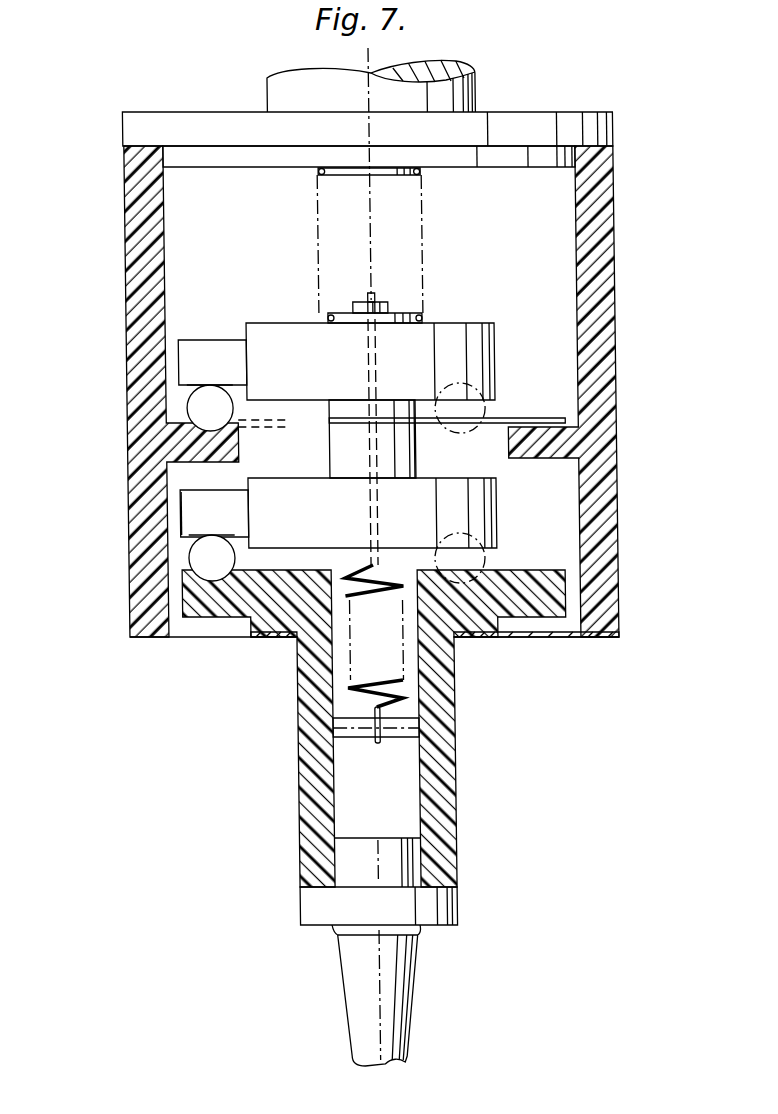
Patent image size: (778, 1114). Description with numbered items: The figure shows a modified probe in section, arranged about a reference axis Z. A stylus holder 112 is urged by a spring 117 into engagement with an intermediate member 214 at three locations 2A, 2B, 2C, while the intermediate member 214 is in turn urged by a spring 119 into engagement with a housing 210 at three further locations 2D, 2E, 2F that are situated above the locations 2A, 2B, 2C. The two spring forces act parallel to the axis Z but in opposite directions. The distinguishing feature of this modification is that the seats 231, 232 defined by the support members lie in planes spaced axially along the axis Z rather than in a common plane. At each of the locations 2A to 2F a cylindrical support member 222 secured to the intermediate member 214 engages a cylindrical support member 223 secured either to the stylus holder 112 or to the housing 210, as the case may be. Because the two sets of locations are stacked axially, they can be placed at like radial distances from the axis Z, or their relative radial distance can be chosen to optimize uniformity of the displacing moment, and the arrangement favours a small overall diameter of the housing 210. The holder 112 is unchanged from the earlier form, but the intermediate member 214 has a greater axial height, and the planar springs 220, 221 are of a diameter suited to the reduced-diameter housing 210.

The reference axis Z is at (367, 240).
The holder 112 is at (289, 765).
The spring 117 is at (336, 690).
The spring 119 is at (314, 173).
The housing 210 is at (611, 268).
The intermediate member 214 is at (490, 383).
The planar spring 220 is at (542, 417).
The planar spring 221 is at (512, 638).
The cylindrical support member 222 is at (188, 340).
The cylindrical support member 223 is at (198, 408).
The seat 231 is at (188, 397).
The seat 232 is at (182, 505).
The location 2A is at (203, 535).
The location 2B is at (500, 551).
The location 2C is at (467, 538).
The location 2D is at (203, 386).
The location 2E is at (499, 389).
The location 2F is at (462, 383).